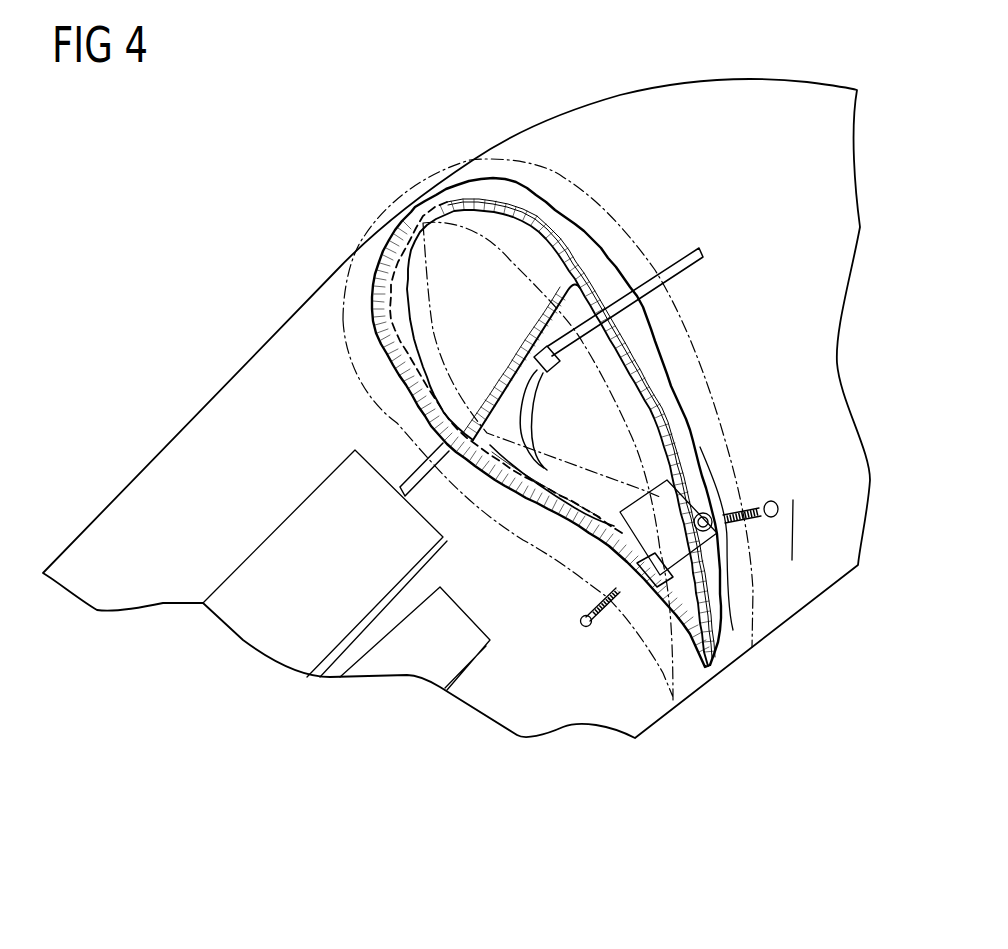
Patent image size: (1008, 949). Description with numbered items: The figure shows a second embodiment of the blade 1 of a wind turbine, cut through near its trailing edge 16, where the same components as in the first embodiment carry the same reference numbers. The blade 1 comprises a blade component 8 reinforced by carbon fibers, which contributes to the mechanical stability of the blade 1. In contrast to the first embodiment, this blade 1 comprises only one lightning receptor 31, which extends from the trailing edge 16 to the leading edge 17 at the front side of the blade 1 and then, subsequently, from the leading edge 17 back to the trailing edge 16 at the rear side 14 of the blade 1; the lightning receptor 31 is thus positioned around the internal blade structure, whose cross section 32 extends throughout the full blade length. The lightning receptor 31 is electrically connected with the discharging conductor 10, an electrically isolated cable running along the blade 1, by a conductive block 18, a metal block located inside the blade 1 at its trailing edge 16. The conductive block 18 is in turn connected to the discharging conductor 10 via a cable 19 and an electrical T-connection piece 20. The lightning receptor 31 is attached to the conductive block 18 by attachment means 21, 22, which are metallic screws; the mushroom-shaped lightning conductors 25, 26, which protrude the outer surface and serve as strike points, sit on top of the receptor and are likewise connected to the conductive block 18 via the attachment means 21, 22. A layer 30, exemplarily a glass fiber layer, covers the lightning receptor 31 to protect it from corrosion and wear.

The blade 1 is at (334, 126).
The blade component 8 is at (260, 632).
The discharging conductor 10 is at (687, 247).
The rear side 14 is at (807, 701).
The trailing edge 16 is at (826, 578).
The leading edge 17 is at (448, 180).
The conductive block 18 is at (667, 510).
The cable 19 is at (528, 416).
The electrical T-connection piece 20 is at (549, 374).
The attachment means 21 is at (792, 560).
The attachment means 22 is at (585, 622).
The lightning conductor 25 is at (733, 630).
The lightning conductor 26 is at (655, 562).
The layer 30 is at (588, 195).
The lightning receptor 31 is at (507, 198).
The cross section 32 is at (538, 240).